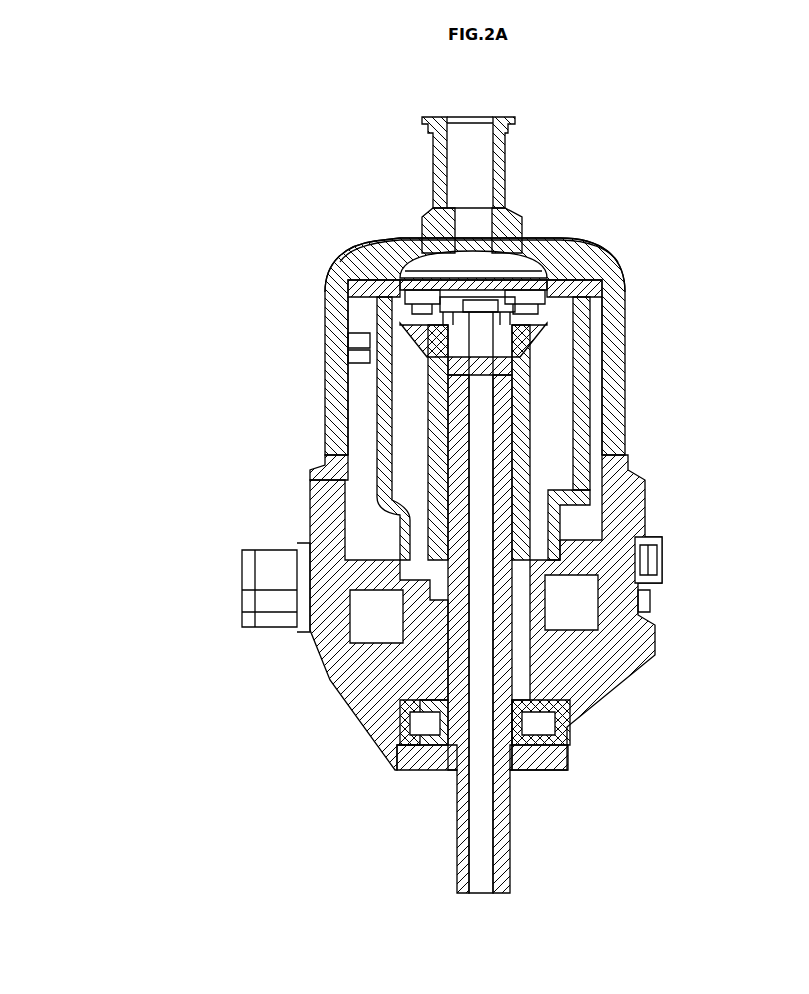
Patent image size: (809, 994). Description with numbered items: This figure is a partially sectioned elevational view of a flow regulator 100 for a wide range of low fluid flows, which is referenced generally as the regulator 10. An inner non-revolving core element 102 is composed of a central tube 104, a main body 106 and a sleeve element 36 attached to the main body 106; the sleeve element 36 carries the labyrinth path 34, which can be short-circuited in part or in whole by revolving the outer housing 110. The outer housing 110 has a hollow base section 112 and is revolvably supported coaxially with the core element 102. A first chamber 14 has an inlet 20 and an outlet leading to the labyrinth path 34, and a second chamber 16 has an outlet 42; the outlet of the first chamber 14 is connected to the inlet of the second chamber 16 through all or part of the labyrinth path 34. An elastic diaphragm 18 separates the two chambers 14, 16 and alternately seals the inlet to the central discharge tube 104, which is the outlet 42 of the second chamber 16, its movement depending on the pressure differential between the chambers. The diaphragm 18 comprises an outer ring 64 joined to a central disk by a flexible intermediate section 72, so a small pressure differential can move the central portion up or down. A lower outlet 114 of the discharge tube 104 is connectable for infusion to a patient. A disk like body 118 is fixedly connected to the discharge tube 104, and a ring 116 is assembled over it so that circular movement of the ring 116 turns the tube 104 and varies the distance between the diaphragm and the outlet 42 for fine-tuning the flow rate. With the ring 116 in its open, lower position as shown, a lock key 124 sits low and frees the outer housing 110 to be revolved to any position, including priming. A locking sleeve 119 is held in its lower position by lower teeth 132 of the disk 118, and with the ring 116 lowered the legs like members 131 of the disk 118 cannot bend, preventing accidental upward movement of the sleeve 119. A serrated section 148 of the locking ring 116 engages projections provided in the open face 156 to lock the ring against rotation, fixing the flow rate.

The valve assembly 10 is at (410, 237).
The first chamber 14 is at (467, 260).
The second chamber 16 is at (510, 328).
The elastic diaphragm 18 is at (500, 250).
The inlet 20 is at (460, 133).
The labyrinth path 34 is at (350, 362).
The sleeve element 36 is at (585, 440).
The outlet 42 is at (505, 262).
The outer ring 64 is at (575, 285).
The flexible intermediate section 72 is at (362, 243).
The flow regulator 100 is at (330, 273).
The inner non-revolving core element 102 is at (343, 512).
The central tube 104 is at (458, 777).
The main body 106 is at (348, 410).
The outer housing 110 is at (348, 303).
The hollow base section 112 is at (340, 482).
The lower outlet 114 is at (492, 870).
The ring 116 is at (655, 625).
The disk like body 118 is at (605, 672).
The locking sleeve 119 is at (600, 770).
The lock key 124 is at (617, 540).
The legs like members 131 is at (387, 690).
The lower teeth 132 is at (425, 742).
The serrated section 148 is at (645, 600).
The open face 156 is at (320, 573).